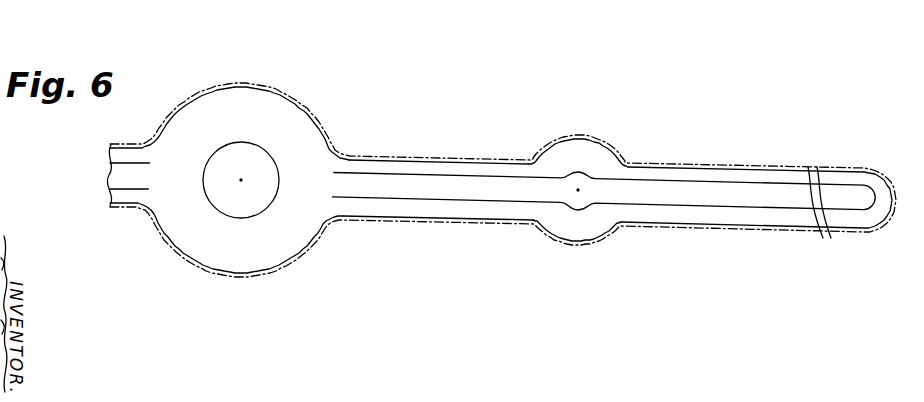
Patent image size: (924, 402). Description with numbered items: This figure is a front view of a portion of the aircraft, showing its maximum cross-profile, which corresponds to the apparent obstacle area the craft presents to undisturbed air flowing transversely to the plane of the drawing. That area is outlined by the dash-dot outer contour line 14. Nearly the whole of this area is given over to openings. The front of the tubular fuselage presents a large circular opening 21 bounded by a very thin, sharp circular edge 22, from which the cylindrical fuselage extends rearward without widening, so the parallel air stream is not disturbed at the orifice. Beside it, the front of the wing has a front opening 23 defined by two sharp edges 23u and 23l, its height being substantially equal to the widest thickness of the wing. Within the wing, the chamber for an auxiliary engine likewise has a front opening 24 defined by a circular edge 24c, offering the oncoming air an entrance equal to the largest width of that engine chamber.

The dash-dot outer contour line 14 is at (340, 123).
The circular opening 21 is at (236, 119).
The circular edge 22 is at (215, 274).
The front opening 23 is at (612, 185).
The upper sharp edge 23u is at (492, 164).
The lower sharp edge 23l is at (490, 217).
The front opening of engine chamber 24 is at (603, 200).
The circular edge of engine chamber opening 24c is at (557, 244).